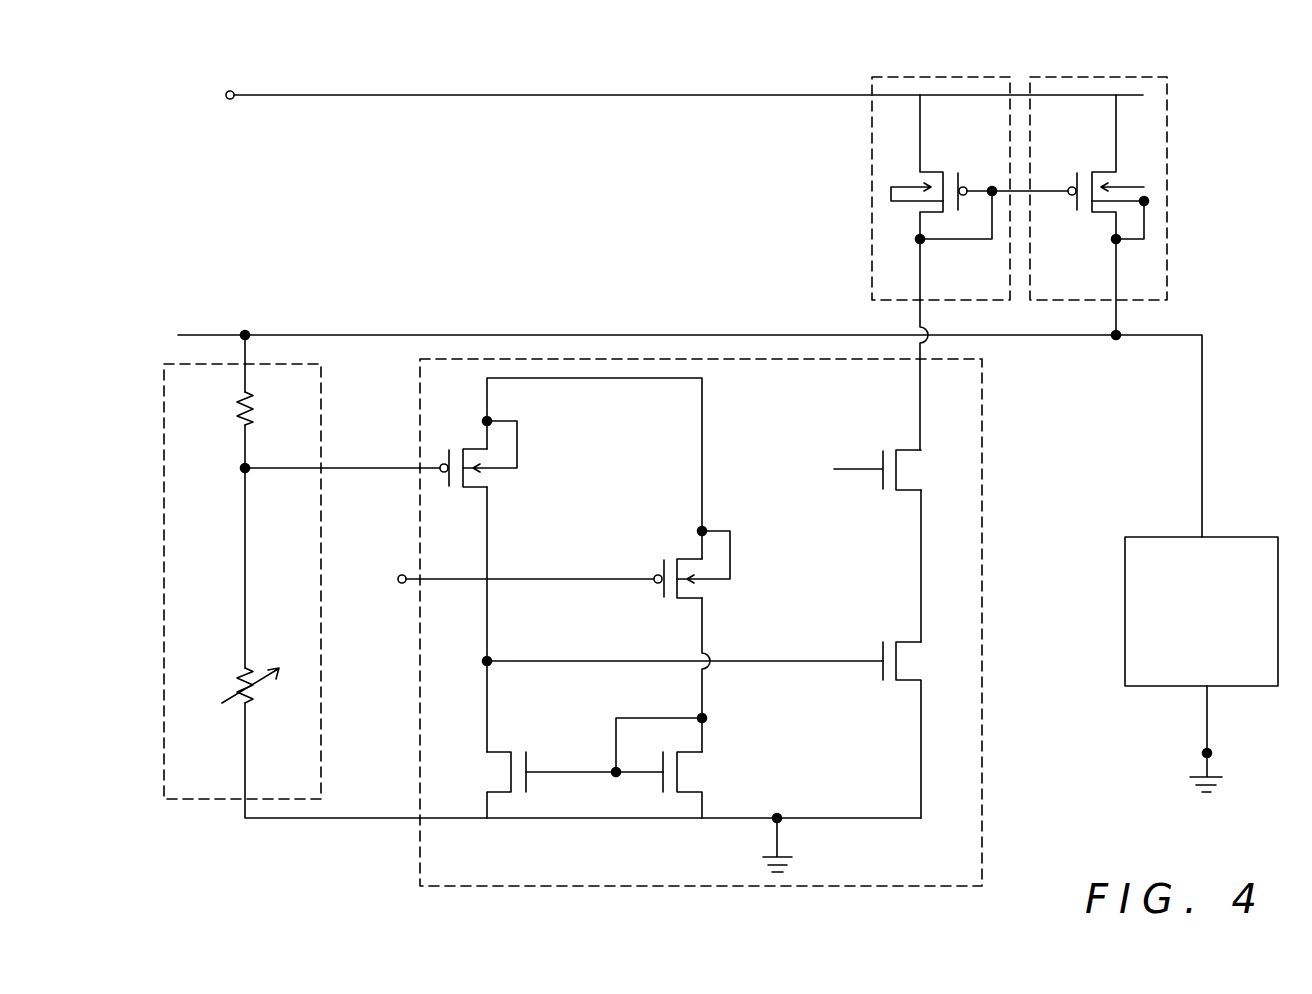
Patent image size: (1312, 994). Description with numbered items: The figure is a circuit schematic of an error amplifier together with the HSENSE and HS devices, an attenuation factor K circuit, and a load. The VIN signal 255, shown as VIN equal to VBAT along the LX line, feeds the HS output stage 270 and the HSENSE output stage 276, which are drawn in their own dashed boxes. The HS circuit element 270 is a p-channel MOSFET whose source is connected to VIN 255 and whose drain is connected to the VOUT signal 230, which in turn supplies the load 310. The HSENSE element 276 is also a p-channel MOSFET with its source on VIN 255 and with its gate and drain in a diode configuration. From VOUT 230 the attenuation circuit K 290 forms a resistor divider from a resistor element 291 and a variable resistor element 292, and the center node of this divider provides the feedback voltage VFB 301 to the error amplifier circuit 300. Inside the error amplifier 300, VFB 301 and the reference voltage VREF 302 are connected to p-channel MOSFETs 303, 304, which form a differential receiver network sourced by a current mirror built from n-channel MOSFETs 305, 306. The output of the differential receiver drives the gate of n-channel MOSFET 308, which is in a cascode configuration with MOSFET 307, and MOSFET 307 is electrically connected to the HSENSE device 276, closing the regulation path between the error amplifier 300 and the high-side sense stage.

The VIN signal 255 is at (528, 96).
The VOUT signal 230 is at (552, 310).
The HSENSE output stage 276 is at (993, 291).
The HS output stage 270 is at (1078, 291).
The attenuation circuit K 290 is at (223, 771).
The resistor element 291 is at (251, 408).
The variable resistor element 292 is at (256, 693).
The feedback voltage VFB input 301 is at (388, 469).
The reference voltage VREF input 302 is at (406, 588).
The error amplifier circuit 300 is at (960, 873).
The p-channel MOSFET 303 is at (492, 476).
The p-channel MOSFET 304 is at (707, 588).
The n-channel MOSFET 305 is at (483, 777).
The n-channel MOSFET 306 is at (707, 777).
The MOSFET 307 is at (927, 473).
The n-channel MOSFET 308 is at (926, 667).
The load 310 is at (1178, 537).